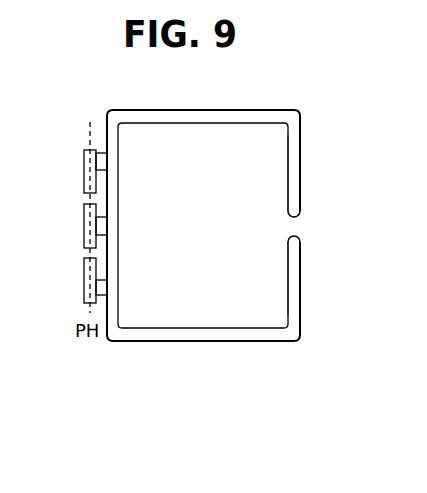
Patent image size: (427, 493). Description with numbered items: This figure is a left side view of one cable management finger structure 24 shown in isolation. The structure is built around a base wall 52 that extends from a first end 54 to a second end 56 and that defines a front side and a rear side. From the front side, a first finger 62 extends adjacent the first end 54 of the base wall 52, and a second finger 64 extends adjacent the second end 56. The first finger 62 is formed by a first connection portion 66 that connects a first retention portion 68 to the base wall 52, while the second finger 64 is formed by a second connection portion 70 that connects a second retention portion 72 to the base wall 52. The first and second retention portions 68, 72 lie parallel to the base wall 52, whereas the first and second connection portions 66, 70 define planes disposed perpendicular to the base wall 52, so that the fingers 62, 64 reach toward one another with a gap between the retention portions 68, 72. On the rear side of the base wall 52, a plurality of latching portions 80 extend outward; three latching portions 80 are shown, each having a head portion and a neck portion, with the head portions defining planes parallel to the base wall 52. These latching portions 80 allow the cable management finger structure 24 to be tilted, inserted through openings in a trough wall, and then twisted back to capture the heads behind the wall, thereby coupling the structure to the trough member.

The cable management finger structure 24 is at (215, 364).
The base wall 52 is at (118, 237).
The first end 54 is at (107, 111).
The second end 56 is at (108, 341).
The first finger 62 is at (303, 90).
The second finger 64 is at (308, 353).
The first connection portion 66 is at (223, 112).
The first retention portion 68 is at (294, 163).
The second connection portion 70 is at (172, 341).
The second retention portion 72 is at (294, 275).
The latching portions 80 is at (72, 220).